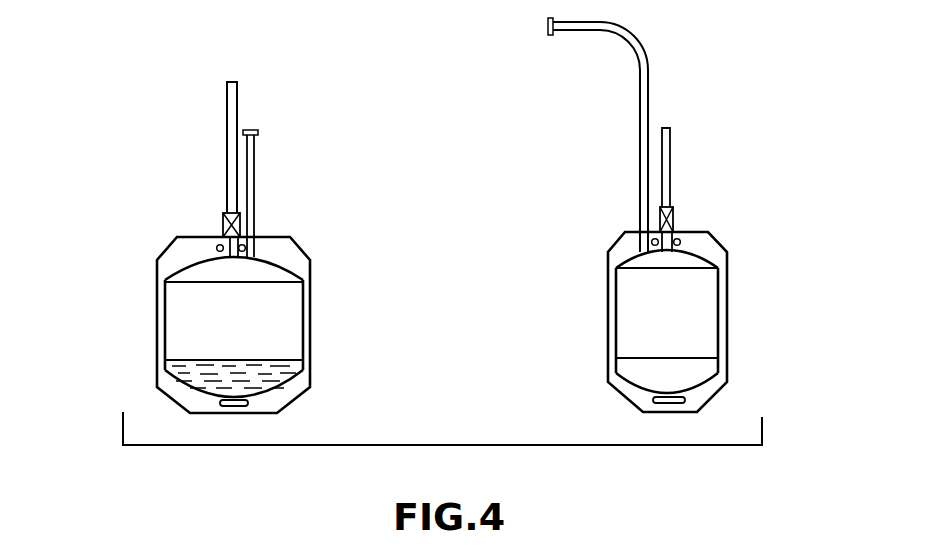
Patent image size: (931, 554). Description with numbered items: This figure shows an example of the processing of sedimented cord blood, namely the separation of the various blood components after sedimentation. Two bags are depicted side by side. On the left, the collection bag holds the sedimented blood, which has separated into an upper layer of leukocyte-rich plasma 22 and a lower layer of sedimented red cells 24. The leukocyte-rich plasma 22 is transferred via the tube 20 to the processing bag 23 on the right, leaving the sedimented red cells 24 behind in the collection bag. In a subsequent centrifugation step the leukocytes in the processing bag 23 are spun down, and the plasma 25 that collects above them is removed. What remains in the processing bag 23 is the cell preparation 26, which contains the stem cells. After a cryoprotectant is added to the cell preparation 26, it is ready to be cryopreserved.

The tube 20 is at (228, 110).
The leukocyte-rich plasma 22 is at (287, 308).
The sedimented red cells 24 is at (293, 370).
The processing bag 23 is at (715, 252).
The plasma 25 is at (703, 312).
The cell preparation 26 is at (703, 370).